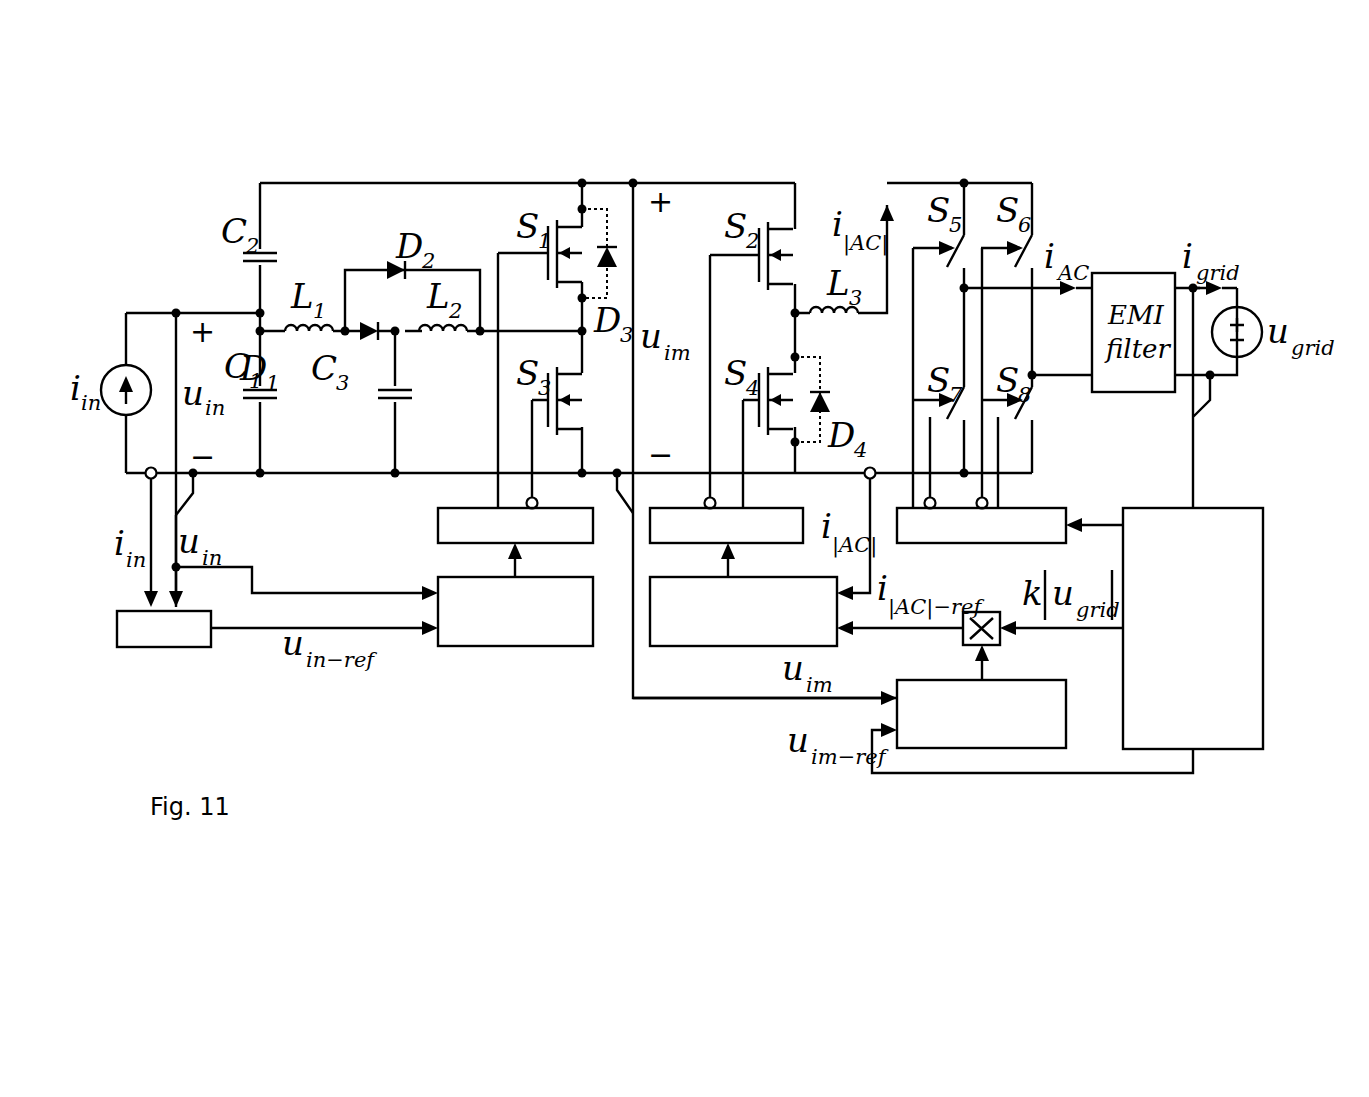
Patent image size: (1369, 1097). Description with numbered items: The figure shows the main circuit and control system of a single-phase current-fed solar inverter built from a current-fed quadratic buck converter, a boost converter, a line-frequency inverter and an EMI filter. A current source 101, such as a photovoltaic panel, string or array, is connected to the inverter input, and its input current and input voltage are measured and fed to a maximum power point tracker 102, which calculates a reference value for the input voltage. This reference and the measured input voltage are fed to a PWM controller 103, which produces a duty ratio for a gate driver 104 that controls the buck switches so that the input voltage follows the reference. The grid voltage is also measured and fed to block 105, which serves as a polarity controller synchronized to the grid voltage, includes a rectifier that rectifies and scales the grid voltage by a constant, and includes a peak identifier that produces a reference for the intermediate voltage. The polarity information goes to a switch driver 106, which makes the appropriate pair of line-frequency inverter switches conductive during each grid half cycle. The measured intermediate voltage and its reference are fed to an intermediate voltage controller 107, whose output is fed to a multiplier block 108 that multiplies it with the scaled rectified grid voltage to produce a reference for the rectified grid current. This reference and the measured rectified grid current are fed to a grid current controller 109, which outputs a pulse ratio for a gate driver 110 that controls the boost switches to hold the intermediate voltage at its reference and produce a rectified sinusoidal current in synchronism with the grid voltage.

The current source 101 is at (108, 368).
The maximum power point tracker 102 is at (121, 648).
The PWM controller 103 is at (446, 648).
The gate driver 104 is at (437, 512).
The polarity controller block 105 is at (1270, 616).
The switch driver 106 is at (1050, 505).
The intermediate voltage controller 107 is at (1063, 752).
The multiplier block 108 is at (977, 609).
The grid current controller 109 is at (733, 647).
The gate driver 110 is at (667, 545).